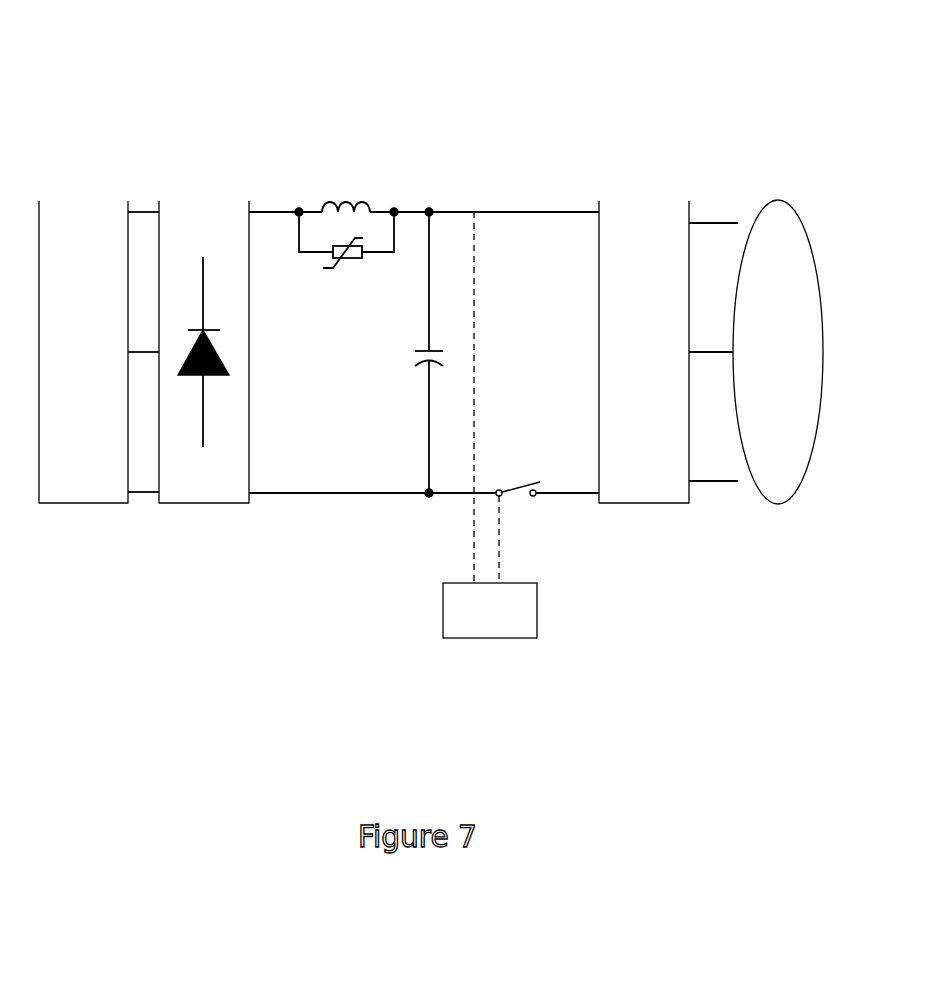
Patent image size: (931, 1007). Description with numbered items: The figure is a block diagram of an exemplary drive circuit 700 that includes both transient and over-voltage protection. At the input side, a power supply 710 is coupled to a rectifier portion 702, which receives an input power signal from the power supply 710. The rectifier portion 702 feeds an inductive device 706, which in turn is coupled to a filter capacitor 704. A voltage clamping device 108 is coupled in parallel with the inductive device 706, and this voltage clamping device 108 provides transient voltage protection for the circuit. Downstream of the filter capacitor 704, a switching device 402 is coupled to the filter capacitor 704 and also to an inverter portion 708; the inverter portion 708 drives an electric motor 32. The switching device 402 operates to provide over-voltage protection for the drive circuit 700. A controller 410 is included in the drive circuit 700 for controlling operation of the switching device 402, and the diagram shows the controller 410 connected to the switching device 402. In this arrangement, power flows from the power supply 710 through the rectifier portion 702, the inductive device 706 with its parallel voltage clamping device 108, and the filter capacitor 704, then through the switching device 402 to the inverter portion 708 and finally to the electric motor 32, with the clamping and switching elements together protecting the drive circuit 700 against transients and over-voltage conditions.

The drive circuit 700 is at (224, 56).
The power supply 710 is at (103, 348).
The rectifier portion 702 is at (182, 503).
The inductive device 706 is at (329, 205).
The voltage clamping device 108 is at (349, 258).
The filter capacitor 704 is at (412, 350).
The switching device 402 is at (519, 488).
The controller 410 is at (509, 620).
The inverter portion 708 is at (663, 354).
The electric motor 32 is at (791, 354).